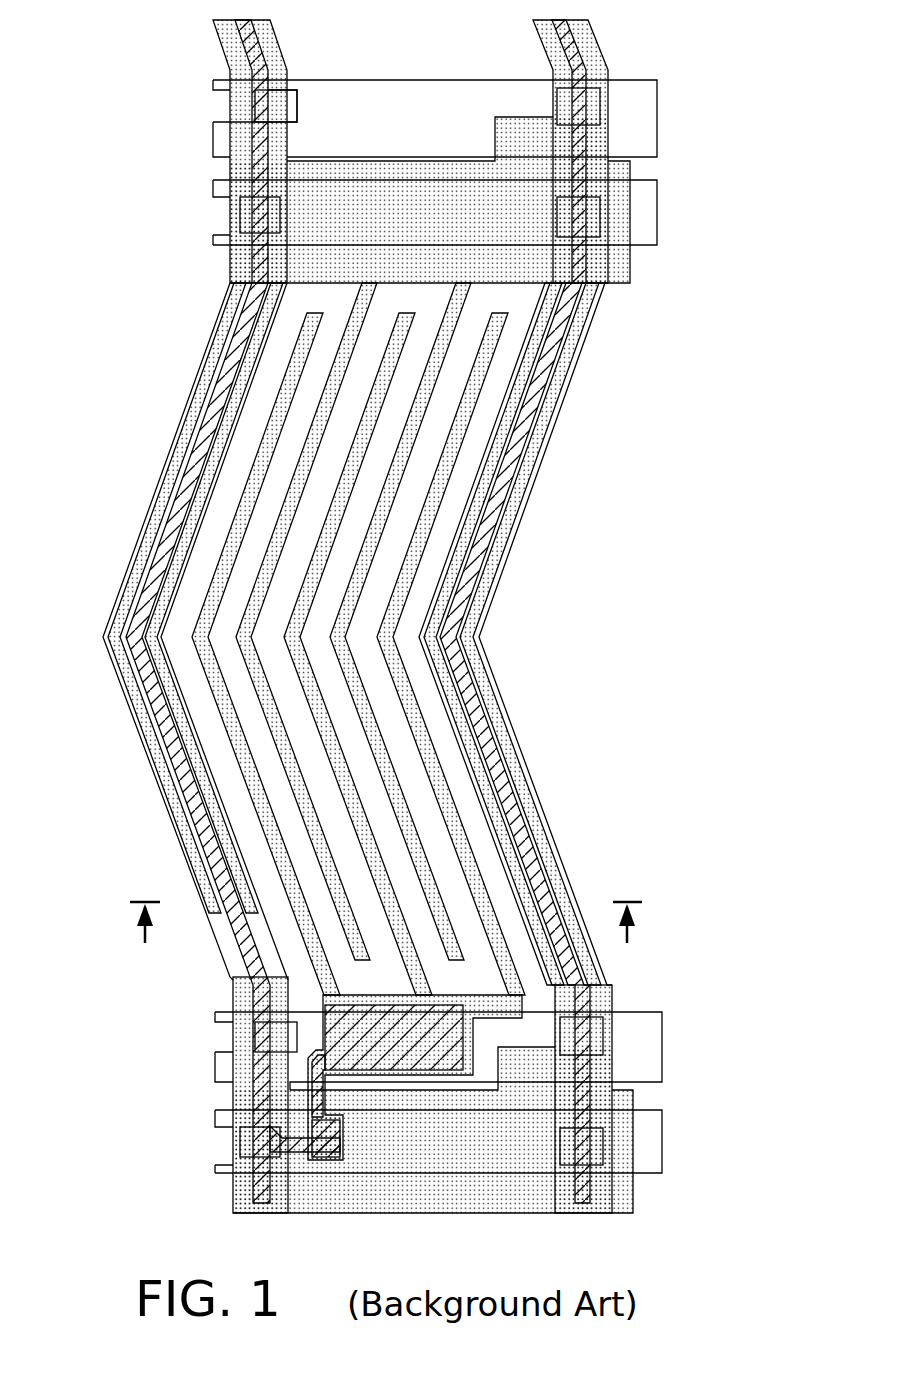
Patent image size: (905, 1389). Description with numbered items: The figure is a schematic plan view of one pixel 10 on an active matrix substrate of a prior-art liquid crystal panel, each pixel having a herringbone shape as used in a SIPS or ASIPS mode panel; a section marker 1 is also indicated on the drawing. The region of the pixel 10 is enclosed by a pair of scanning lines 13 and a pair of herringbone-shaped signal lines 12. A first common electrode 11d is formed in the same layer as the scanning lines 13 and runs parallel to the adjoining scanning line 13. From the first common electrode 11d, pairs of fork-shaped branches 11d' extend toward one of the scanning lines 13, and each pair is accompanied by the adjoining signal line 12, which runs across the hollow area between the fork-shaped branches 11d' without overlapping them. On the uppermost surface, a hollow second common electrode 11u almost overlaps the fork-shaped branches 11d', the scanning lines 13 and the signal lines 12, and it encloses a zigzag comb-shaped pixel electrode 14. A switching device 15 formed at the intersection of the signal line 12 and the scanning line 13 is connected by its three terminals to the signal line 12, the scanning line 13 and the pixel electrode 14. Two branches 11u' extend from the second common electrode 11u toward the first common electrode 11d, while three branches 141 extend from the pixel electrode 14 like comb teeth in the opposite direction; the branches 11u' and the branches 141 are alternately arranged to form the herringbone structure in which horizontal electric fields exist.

The pixel 10 is at (708, 534).
The second common electrode 11u is at (421, 665).
The branches of the second common electrode 11u' is at (264, 620).
The first common electrode 11d is at (489, 585).
The fork-shaped branches 11d' is at (394, 640).
The signal line 12 is at (262, 104).
The scanning line 13 is at (646, 196).
The pixel electrode 14 is at (488, 1015).
The branches of the pixel electrode 141 is at (288, 393).
The switching device 15 is at (363, 1147).
The section line I-I 1 is at (388, 928).